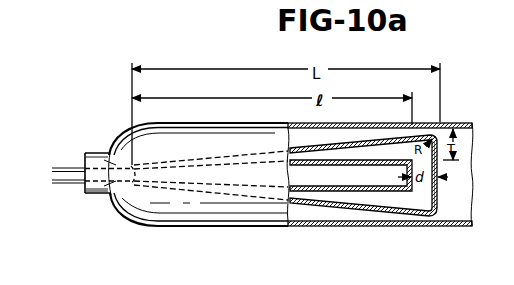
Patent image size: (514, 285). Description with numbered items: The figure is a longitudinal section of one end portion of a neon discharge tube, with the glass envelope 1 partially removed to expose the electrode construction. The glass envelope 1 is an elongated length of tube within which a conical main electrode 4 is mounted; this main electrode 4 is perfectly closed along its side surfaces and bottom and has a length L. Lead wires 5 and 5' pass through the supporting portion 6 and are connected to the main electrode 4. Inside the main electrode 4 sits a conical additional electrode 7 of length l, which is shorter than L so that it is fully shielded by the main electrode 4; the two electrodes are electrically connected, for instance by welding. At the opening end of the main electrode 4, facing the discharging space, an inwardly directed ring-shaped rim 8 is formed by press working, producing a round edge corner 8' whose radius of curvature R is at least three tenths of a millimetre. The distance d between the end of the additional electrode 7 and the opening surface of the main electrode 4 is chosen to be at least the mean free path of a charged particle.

The glass envelope 1 is at (468, 124).
The main electrode 4 is at (390, 214).
The lead wire 5 is at (97, 159).
The lead wire 5' is at (106, 190).
The supporting portion 6 is at (93, 194).
The additional electrode 7 is at (306, 191).
The inwardly directed rim 8 is at (454, 202).
The round edge corner 8' is at (452, 114).